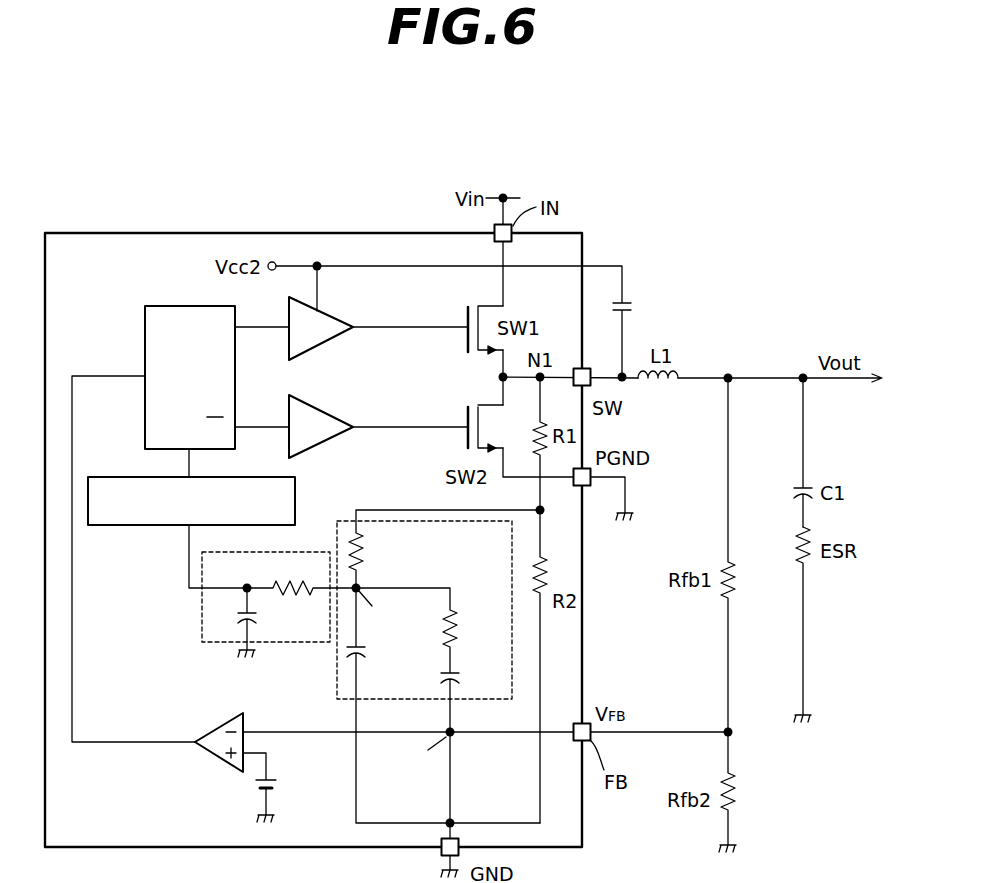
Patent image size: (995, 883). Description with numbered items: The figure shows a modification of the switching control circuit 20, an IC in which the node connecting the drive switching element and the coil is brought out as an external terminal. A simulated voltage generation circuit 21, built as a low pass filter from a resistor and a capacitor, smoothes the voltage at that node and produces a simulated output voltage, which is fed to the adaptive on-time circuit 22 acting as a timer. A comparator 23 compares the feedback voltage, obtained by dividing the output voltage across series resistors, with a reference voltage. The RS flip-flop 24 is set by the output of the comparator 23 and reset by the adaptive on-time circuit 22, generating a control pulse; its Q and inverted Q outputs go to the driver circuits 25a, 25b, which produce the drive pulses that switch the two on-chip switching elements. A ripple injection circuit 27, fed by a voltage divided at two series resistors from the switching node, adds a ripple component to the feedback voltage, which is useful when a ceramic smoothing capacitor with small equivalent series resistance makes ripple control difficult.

The switching control circuit 20 is at (283, 233).
The simulated voltage generation circuit 21 is at (202, 610).
The adaptive on-time circuit 22 is at (141, 525).
The comparator 23 is at (215, 757).
The RS flip-flop 24 is at (155, 306).
The driver circuit 25a is at (323, 347).
The driver circuit 25b is at (323, 447).
The ripple injection circuit 27 is at (337, 660).